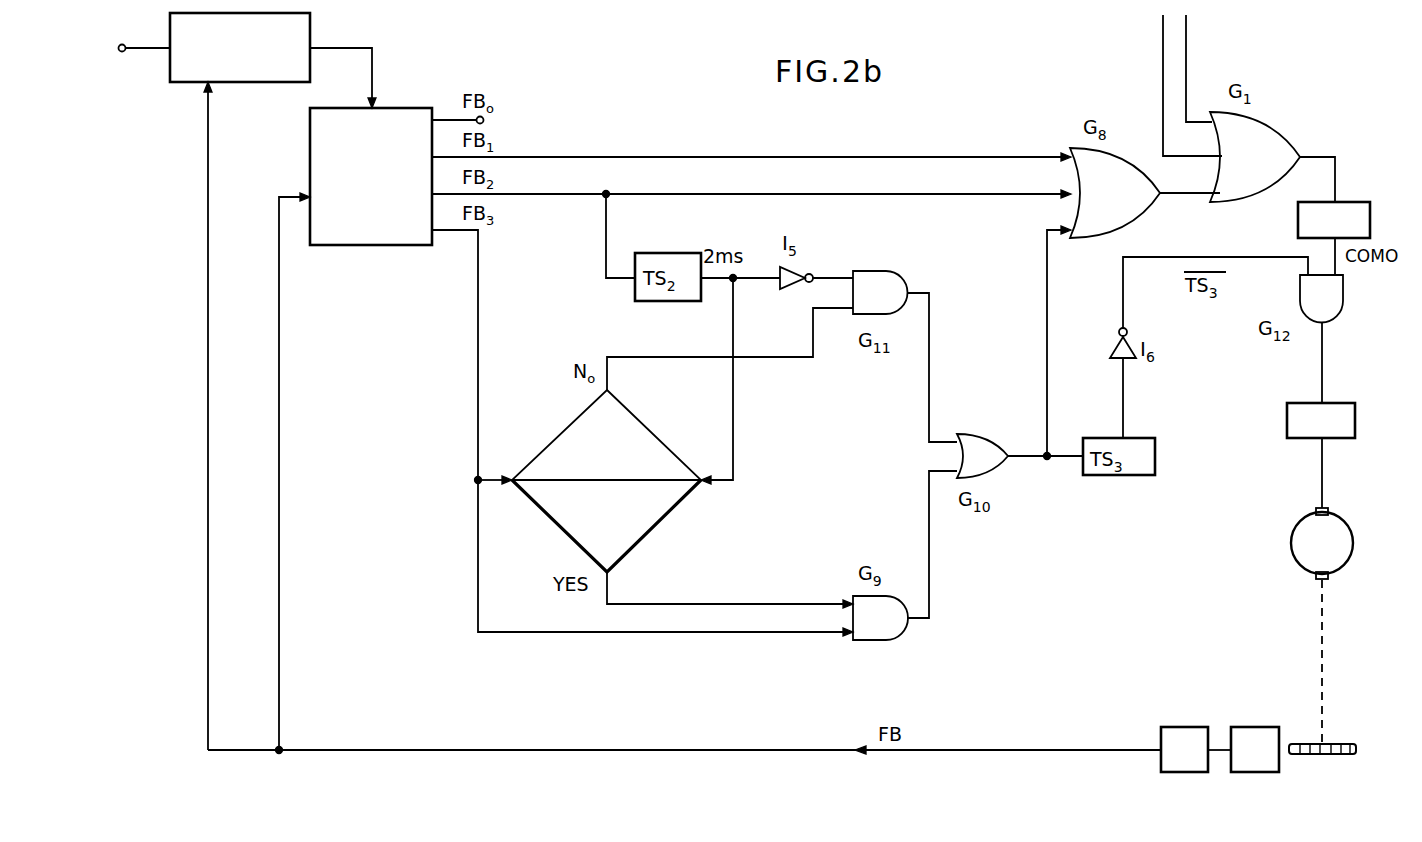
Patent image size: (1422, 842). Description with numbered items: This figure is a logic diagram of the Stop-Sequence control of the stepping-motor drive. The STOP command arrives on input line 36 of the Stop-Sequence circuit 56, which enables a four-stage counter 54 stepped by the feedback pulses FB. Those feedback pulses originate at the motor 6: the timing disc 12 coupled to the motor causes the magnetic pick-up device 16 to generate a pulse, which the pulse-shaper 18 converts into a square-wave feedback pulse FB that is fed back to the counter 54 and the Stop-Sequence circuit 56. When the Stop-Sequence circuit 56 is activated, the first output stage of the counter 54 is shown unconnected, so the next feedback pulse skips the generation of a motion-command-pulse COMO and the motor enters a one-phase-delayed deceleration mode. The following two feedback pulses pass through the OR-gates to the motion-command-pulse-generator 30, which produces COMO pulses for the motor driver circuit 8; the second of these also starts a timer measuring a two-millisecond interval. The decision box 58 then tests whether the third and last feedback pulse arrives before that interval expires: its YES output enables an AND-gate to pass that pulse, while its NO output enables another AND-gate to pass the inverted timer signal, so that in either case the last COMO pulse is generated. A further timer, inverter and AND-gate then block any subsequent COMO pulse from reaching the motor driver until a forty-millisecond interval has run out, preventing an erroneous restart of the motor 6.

The input line 36 is at (141, 47).
The Stop-Sequence circuit 56 is at (180, 83).
The four-stage counter 54 is at (357, 246).
The decision box 58 is at (658, 528).
The motion-command-pulse-generator 30 is at (1298, 226).
The motor driver circuit 8 is at (1287, 414).
The motor 6 is at (1291, 544).
The pulse-shaper 18 is at (1170, 727).
The magnetic pick-up device 16 is at (1250, 727).
The timing disc 12 is at (1307, 742).